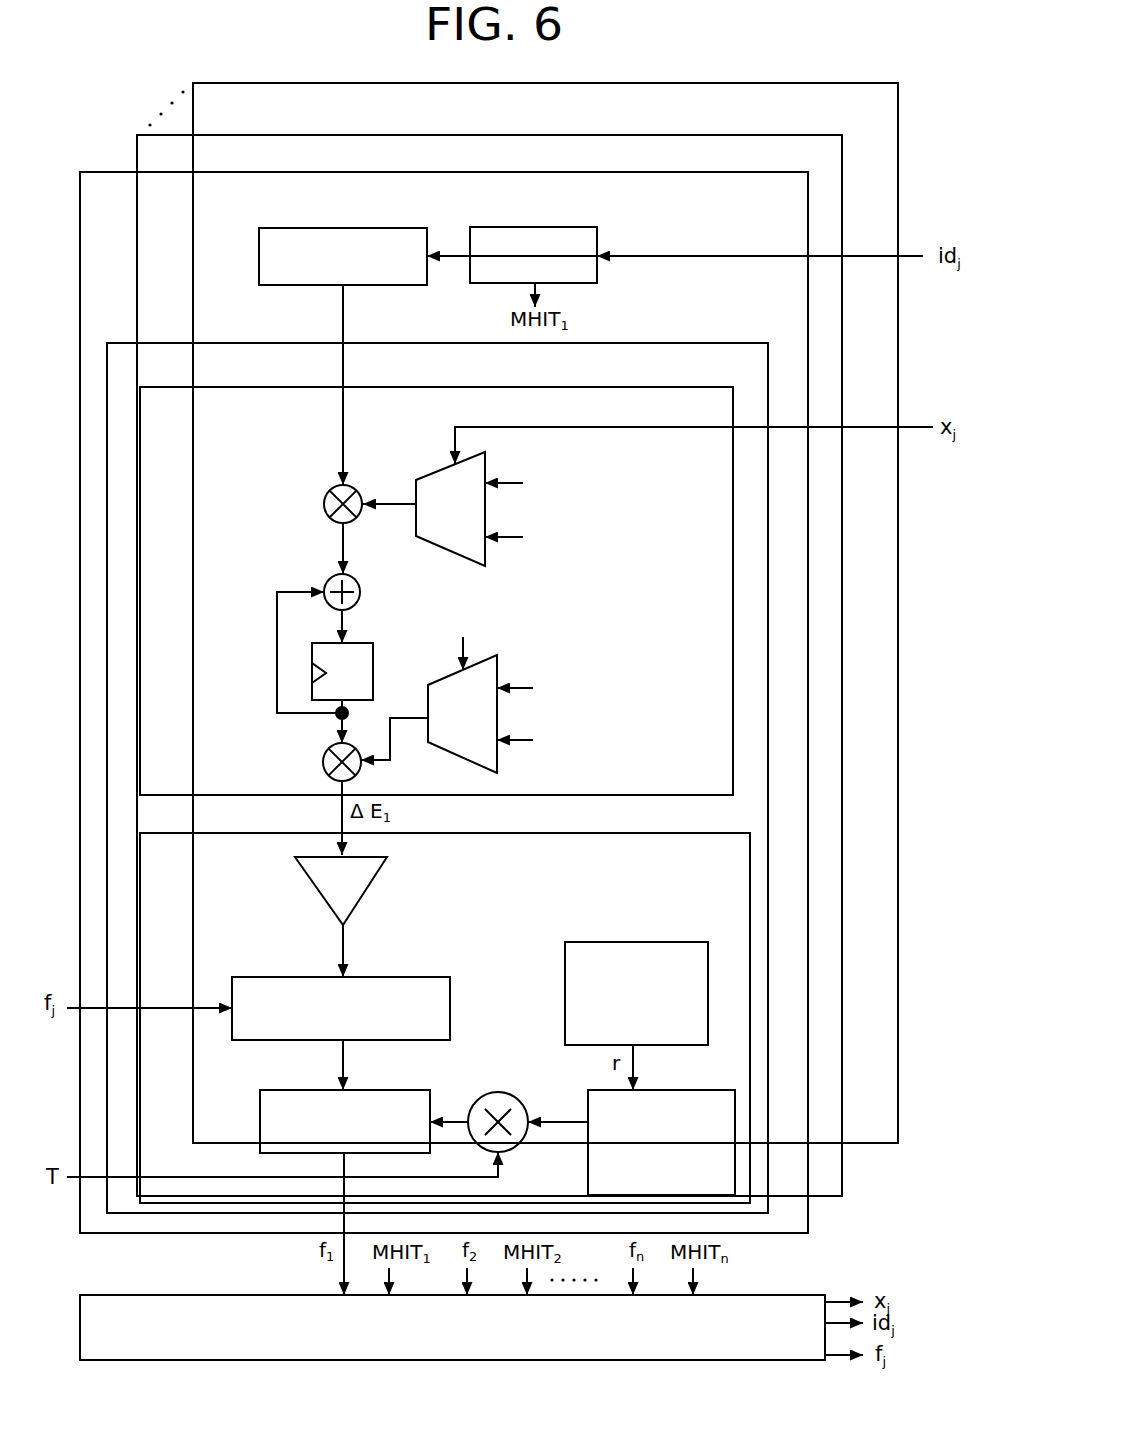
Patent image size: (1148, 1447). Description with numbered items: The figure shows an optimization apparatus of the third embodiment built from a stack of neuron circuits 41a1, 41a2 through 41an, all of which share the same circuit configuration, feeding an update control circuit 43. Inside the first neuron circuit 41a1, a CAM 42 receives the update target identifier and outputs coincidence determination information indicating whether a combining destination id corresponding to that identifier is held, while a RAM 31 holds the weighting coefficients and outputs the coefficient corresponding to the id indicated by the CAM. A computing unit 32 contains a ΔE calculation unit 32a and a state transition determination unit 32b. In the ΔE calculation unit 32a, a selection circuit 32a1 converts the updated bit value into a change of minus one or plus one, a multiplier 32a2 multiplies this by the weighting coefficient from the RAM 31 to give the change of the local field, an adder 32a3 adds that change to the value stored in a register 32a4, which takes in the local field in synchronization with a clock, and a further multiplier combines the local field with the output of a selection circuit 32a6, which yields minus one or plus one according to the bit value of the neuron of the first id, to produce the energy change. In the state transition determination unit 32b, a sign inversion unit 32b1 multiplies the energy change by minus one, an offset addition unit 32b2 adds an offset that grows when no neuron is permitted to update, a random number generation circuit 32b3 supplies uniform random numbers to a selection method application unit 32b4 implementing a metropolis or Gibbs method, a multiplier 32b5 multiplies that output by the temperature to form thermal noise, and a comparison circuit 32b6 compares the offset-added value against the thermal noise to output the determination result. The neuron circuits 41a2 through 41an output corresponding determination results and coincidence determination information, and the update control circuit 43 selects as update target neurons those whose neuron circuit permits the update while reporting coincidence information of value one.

The neuron circuit 41a1 is at (600, 172).
The neuron circuit 41a2 is at (687, 135).
The neuron circuit 41an is at (925, 90).
The RAM 31 is at (349, 226).
The CAM 42 is at (483, 227).
The computing unit 32 is at (710, 343).
The ΔE calculation unit 32a is at (510, 387).
The selection circuit 32a1 is at (445, 468).
The multiplier 32a2 is at (323, 500).
The adder 32a3 is at (325, 580).
The register 32a4 is at (312, 652).
The selection circuit 32a6 is at (323, 758).
The state transition determination unit 32b is at (652, 833).
The sign inversion unit 32b1 is at (315, 885).
The offset addition unit 32b2 is at (408, 977).
The random number generation circuit 32b3 is at (658, 942).
The selection method application unit 32b4 is at (652, 1090).
The multiplier 32b5 is at (498, 1092).
The comparison circuit 32b6 is at (365, 1090).
The update control circuit 43 is at (742, 1295).